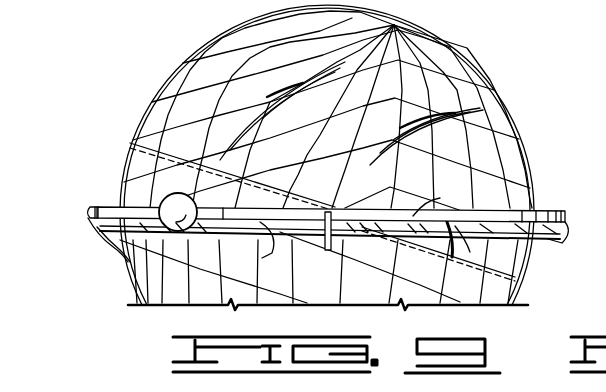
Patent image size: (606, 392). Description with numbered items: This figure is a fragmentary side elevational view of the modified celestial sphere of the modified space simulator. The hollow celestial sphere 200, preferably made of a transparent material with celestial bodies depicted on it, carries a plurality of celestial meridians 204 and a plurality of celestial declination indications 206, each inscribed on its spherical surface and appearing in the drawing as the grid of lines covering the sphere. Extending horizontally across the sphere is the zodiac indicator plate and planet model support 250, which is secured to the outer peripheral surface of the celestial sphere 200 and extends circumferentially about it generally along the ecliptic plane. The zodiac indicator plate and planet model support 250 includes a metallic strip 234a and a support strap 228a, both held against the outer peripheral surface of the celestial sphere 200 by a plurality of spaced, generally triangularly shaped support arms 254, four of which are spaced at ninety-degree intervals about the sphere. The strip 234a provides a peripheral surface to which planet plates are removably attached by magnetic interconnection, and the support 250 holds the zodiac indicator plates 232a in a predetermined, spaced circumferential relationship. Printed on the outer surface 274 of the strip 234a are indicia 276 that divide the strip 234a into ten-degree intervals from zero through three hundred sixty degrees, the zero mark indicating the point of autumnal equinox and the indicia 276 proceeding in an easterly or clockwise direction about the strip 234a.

The celestial sphere 200 is at (430, 78).
The celestial meridians 204 is at (252, 36).
The celestial declination indications 206 is at (422, 44).
The indicia 276 is at (370, 188).
The outer surface 274 is at (415, 214).
The strip 234a is at (537, 213).
The support arms 254 is at (97, 226).
The zodiac indicator plates 232a is at (268, 252).
The support strap 228a is at (126, 262).
The zodiac indicator plate and planet model support 250 is at (462, 304).